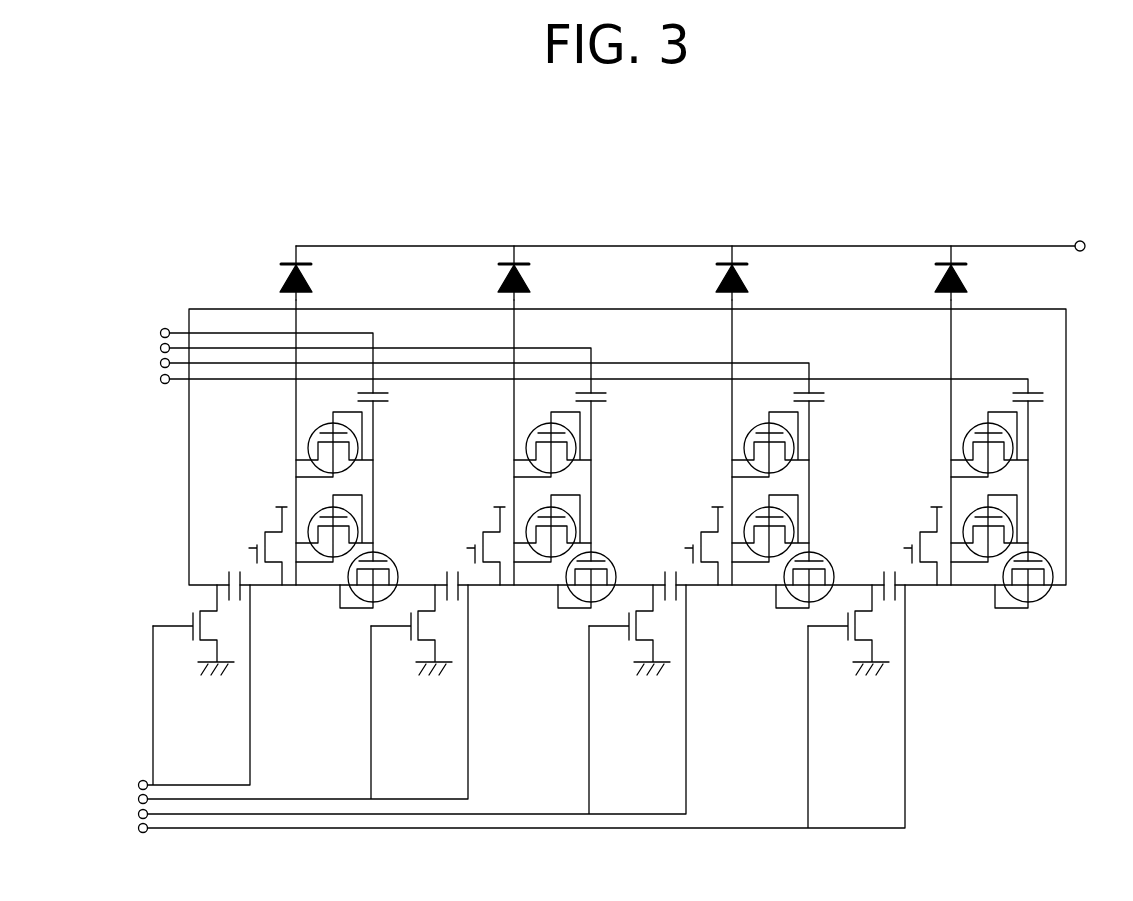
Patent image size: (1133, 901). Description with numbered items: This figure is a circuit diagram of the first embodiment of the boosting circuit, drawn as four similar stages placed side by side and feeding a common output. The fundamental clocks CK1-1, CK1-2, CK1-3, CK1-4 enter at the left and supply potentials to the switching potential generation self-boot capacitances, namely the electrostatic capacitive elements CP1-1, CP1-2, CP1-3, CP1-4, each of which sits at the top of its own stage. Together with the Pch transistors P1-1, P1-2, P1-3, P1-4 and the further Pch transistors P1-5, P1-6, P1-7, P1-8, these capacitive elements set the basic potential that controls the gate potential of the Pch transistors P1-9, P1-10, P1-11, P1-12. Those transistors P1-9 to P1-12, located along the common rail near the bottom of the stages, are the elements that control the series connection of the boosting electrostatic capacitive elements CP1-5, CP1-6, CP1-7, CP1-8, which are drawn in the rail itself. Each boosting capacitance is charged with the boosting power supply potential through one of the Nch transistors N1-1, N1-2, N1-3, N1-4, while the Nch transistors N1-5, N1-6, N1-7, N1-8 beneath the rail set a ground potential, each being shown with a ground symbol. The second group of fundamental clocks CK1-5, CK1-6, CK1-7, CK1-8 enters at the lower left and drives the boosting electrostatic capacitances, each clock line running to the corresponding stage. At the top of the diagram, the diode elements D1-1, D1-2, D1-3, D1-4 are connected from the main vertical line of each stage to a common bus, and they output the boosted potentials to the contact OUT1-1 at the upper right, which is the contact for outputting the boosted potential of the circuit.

The diode element D1-1 is at (276, 272).
The diode element D1-2 is at (490, 245).
The diode element D1-3 is at (708, 245).
The diode element D1-4 is at (929, 245).
The electrostatic capacitive element CP1-1 is at (356, 397).
The electrostatic capacitive element CP1-2 is at (512, 396).
The electrostatic capacitive element CP1-3 is at (726, 396).
The electrostatic capacitive element CP1-4 is at (950, 396).
The boosting electrostatic capacitive element CP1-5 is at (238, 606).
The boosting electrostatic capacitive element CP1-6 is at (500, 616).
The boosting electrostatic capacitive element CP1-7 is at (719, 616).
The boosting electrostatic capacitive element CP1-8 is at (938, 616).
The Pch transistor P1-1 is at (308, 442).
The Pch transistor P1-2 is at (511, 444).
The Pch transistor P1-3 is at (728, 444).
The Pch transistor P1-4 is at (948, 444).
The Pch transistor P1-5 is at (323, 512).
The Pch transistor P1-6 is at (509, 505).
The Pch transistor P1-7 is at (723, 505).
The Pch transistor P1-8 is at (945, 505).
The Pch transistor P1-9 is at (410, 548).
The Pch transistor P1-10 is at (610, 564).
The Pch transistor P1-11 is at (828, 564).
The Pch transistor P1-12 is at (1056, 608).
The Nch transistor N1-1 is at (258, 530).
The Nch transistor N1-2 is at (452, 535).
The Nch transistor N1-3 is at (670, 535).
The Nch transistor N1-4 is at (890, 535).
The Nch transistor N1-5 is at (197, 645).
The Nch transistor N1-6 is at (411, 654).
The Nch transistor N1-7 is at (629, 654).
The Nch transistor N1-8 is at (848, 654).
The fundamental clock CK1-1 is at (160, 331).
The fundamental clock CK1-2 is at (160, 348).
The fundamental clock CK1-3 is at (160, 364).
The fundamental clock CK1-4 is at (160, 381).
The fundamental clock CK1-5 is at (138, 784).
The fundamental clock CK1-6 is at (138, 799).
The fundamental clock CK1-7 is at (138, 815).
The fundamental clock CK1-8 is at (138, 830).
The contact OUT1-1 is at (1080, 241).